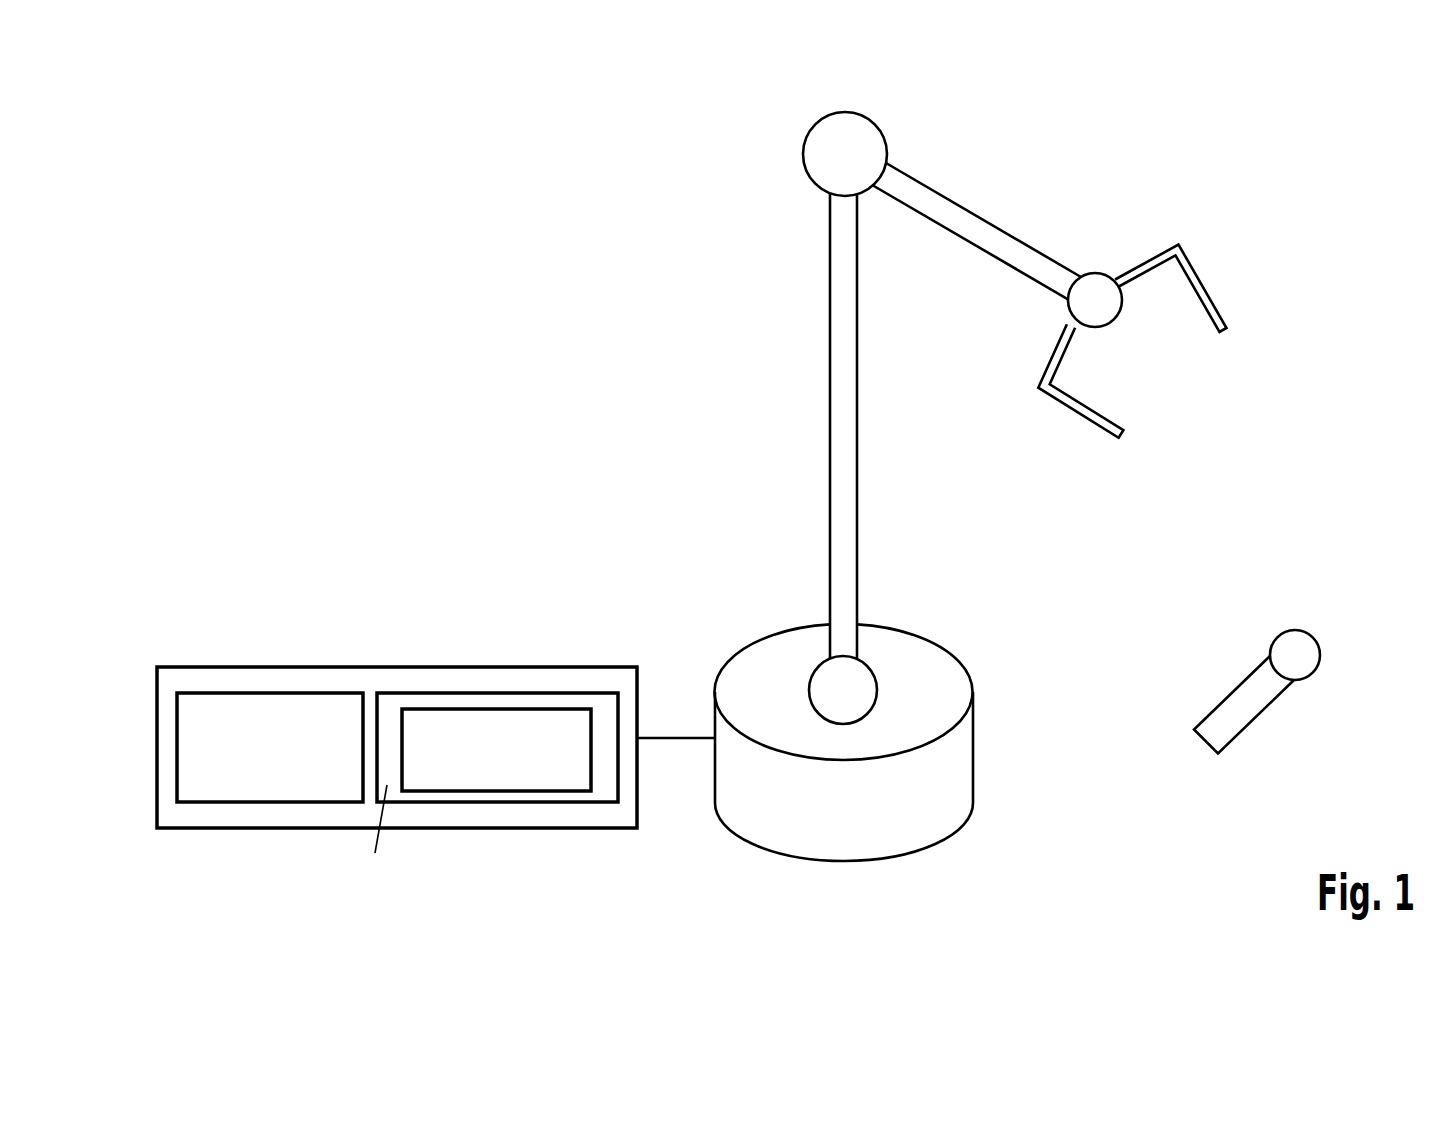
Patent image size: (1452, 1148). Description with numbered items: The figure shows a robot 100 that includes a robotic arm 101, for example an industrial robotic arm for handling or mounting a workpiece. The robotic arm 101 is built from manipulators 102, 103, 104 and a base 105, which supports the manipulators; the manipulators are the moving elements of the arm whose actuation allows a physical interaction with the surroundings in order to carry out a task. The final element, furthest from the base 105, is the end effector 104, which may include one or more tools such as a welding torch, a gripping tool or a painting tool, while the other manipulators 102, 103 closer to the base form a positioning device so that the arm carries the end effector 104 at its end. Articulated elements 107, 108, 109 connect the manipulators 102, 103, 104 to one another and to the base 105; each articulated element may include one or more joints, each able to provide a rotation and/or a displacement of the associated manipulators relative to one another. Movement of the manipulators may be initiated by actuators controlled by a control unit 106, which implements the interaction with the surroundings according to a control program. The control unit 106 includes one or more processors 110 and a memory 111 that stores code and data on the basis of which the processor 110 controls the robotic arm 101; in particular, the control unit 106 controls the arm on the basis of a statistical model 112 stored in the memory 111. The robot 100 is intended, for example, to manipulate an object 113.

The robot 100 is at (1130, 158).
The robotic arm 101 is at (782, 256).
The manipulator 102 is at (843, 383).
The manipulator 103 is at (1017, 248).
The end effector 104 is at (1198, 288).
The base 105 is at (952, 762).
The control unit 106 is at (393, 667).
The articulated element 107 is at (858, 680).
The articulated element 108 is at (818, 153).
The articulated element 109 is at (1110, 308).
The processor 110 is at (290, 765).
The memory 111 is at (495, 803).
The statistical model 112 is at (472, 765).
The object 113 is at (1240, 705).